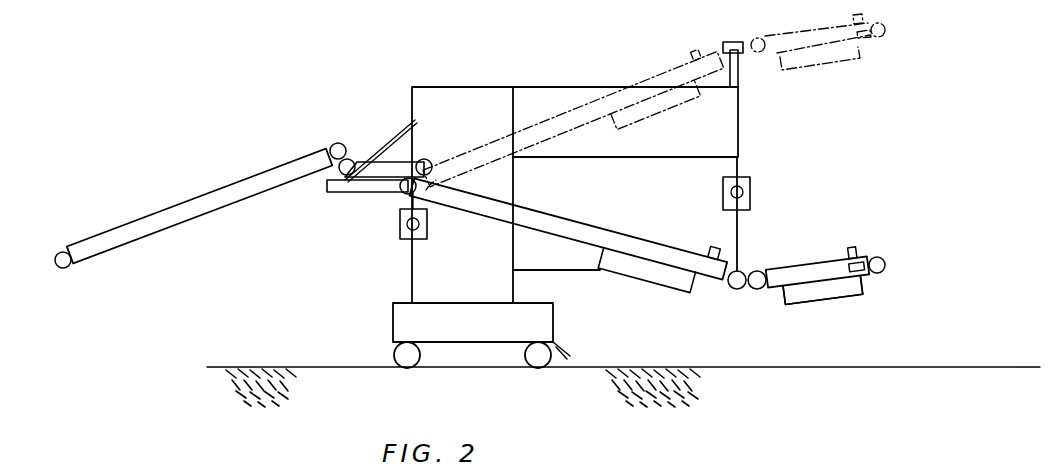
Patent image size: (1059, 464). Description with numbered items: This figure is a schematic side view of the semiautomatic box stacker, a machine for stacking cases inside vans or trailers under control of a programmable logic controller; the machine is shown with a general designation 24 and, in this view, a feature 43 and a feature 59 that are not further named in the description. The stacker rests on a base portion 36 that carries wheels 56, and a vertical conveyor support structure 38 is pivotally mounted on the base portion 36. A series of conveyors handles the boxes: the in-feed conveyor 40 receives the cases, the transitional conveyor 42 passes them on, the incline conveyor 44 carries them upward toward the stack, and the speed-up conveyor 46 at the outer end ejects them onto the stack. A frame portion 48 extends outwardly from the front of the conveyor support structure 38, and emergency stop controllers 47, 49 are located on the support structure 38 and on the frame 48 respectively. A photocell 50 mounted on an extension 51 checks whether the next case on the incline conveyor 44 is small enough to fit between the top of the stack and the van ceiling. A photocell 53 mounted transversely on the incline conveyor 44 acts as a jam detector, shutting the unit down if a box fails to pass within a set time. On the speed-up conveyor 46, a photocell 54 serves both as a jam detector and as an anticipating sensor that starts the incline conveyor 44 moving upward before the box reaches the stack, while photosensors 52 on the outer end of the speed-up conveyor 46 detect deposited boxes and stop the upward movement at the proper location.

The dispensing apparatus 24 is at (152, 57).
The base portion 36 is at (393, 325).
The conveyor support structure 38 is at (457, 80).
The in-feed conveyor 40 is at (220, 187).
The transitional conveyor 42 is at (392, 163).
The mounting bar 43 is at (362, 192).
The incline conveyor 44 is at (648, 83).
The speed-up conveyor 46 is at (803, 38).
The emergency stop controller 47 is at (397, 225).
The frame portion 48 is at (745, 167).
The emergency stop controller 49 is at (750, 193).
The photocell 50 is at (735, 42).
The extension 51 is at (733, 80).
The photosensor 52 is at (866, 277).
The photocell 53 is at (718, 250).
The photocell 54 is at (855, 245).
The wheels 56 is at (538, 362).
The reference 59 is at (109, 457).